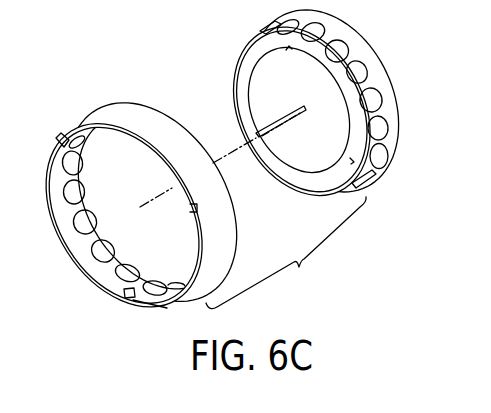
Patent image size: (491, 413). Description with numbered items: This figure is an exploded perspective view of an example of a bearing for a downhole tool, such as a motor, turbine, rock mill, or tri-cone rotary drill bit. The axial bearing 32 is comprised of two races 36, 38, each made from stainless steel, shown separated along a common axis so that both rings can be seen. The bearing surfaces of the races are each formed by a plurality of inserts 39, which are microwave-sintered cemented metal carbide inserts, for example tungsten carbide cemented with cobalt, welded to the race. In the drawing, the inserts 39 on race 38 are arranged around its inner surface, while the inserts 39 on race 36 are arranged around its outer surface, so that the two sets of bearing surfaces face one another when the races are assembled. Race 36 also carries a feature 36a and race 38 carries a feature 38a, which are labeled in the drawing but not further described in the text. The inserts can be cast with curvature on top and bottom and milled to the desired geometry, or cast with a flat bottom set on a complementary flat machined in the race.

The axial bearing 32 is at (286, 253).
The race 36 is at (240, 60).
The slot 36a is at (257, 133).
The race 38 is at (105, 115).
The tab 38a is at (62, 142).
The inserts 39 is at (73, 163).